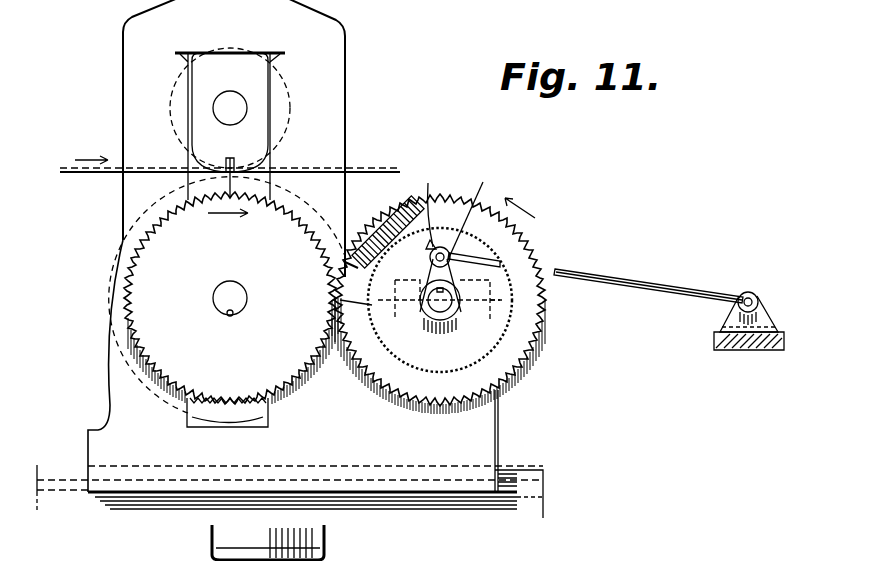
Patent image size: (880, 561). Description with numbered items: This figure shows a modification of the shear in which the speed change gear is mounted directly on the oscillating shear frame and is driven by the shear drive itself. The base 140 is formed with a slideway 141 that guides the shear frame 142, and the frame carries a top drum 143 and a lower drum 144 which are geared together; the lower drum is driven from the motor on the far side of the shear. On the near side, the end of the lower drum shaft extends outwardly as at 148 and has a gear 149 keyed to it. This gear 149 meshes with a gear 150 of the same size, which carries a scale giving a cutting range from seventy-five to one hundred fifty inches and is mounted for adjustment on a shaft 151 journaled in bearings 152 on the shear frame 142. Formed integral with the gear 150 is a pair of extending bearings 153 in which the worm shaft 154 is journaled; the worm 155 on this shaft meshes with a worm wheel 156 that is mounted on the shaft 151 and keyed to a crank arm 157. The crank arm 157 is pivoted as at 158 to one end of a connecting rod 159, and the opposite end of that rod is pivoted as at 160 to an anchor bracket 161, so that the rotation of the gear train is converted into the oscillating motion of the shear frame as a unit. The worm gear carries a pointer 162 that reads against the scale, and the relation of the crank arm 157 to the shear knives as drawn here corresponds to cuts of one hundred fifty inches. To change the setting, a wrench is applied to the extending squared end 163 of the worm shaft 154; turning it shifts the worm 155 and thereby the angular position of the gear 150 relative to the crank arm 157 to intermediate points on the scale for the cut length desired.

The base 140 is at (112, 508).
The slideway 141 is at (87, 463).
The shear frame 142 is at (333, 78).
The top drum 143 is at (198, 81).
The lower drum 144 is at (135, 283).
The extending end of lower drum shaft 148 is at (218, 291).
The gear 149 is at (133, 338).
The gear 150 is at (367, 370).
The shaft 151 is at (440, 307).
The bearings 152 is at (426, 305).
The extending bearings 153 is at (408, 216).
The worm shaft 154 is at (340, 210).
The worm 155 is at (430, 259).
The worm wheel 156 is at (377, 300).
The crank arm 157 is at (452, 282).
The pivot 158 is at (482, 212).
The connecting rod 159 is at (635, 273).
The pivot 160 is at (752, 294).
The anchor bracket 161 is at (735, 322).
The pointer 162 is at (434, 206).
The squared end of worm shaft 163 is at (412, 202).